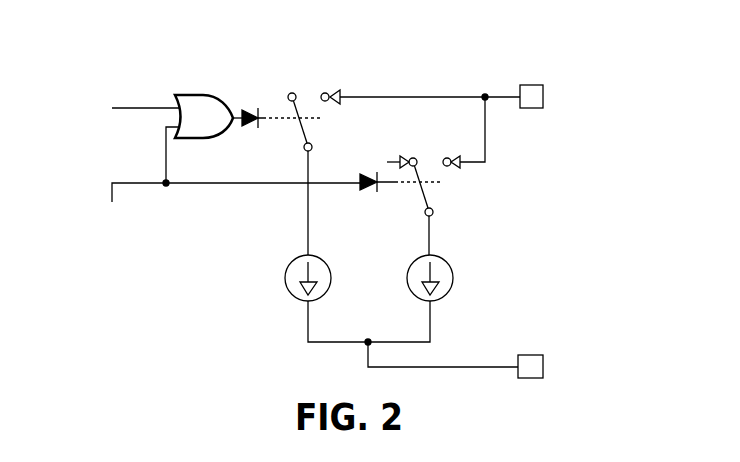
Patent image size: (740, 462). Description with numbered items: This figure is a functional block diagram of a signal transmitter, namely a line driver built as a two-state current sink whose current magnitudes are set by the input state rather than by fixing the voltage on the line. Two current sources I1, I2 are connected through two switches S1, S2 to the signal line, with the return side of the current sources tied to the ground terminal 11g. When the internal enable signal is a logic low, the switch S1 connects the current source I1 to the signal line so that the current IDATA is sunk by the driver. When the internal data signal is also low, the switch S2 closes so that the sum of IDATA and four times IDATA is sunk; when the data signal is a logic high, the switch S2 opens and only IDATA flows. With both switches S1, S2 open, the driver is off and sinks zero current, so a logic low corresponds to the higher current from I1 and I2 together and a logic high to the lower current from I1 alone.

The ground line terminal (MG) 11g is at (492, 363).
The switch S1 is at (423, 159).
The switch S2 is at (314, 93).
The current source I1 is at (440, 256).
The current source I2 is at (320, 256).